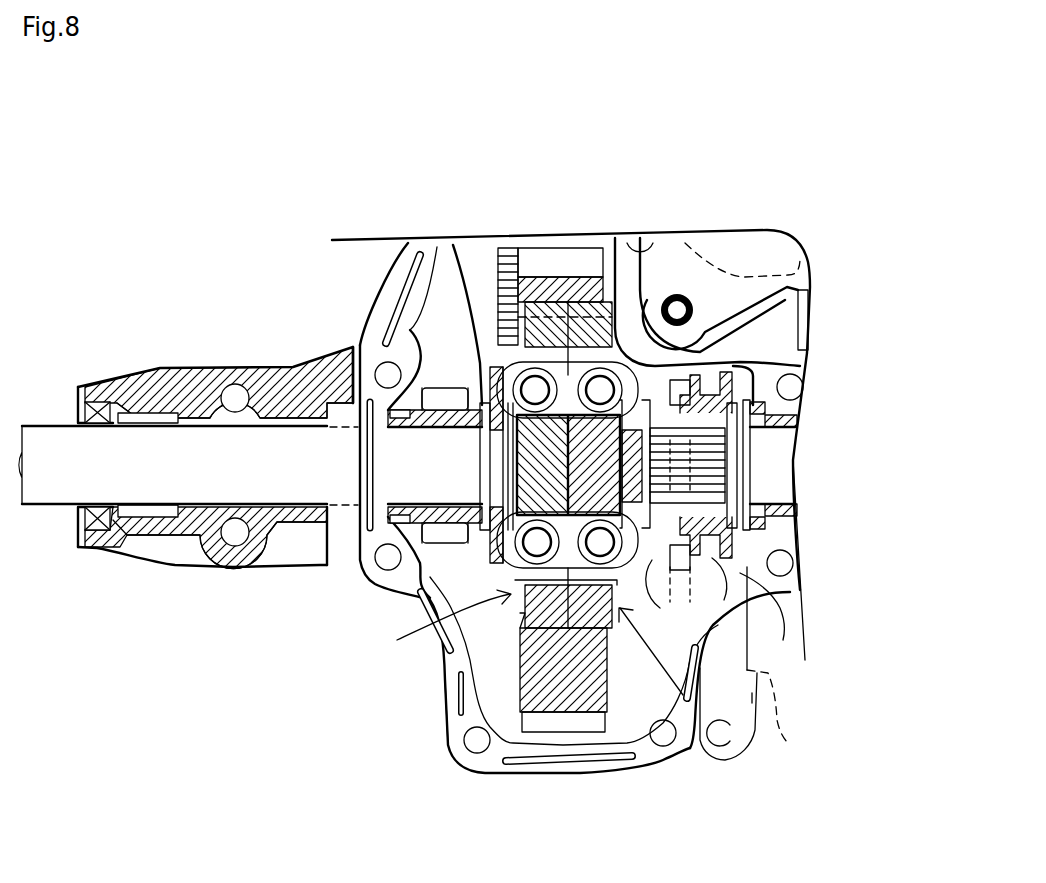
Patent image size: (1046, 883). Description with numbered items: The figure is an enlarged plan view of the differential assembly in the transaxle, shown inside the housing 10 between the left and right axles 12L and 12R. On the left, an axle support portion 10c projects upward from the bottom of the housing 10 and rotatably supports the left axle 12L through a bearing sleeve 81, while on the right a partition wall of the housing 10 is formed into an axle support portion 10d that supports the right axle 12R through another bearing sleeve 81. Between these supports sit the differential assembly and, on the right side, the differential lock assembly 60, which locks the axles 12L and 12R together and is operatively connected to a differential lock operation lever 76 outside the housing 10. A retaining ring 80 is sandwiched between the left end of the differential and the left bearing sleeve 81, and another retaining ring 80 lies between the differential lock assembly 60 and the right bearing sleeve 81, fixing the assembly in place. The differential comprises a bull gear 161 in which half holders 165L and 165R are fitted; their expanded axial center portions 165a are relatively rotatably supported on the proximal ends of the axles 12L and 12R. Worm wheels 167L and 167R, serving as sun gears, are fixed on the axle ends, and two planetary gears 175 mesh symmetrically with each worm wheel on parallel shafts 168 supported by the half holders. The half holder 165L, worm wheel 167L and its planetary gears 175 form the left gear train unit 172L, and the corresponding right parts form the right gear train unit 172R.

The housing 10 is at (407, 262).
The axle support portion 10c is at (393, 578).
The axle support portion 10d is at (793, 592).
The left axle 12L is at (138, 430).
The right axle 12R is at (787, 460).
The differential lock assembly 60 is at (787, 567).
The differential lock operation lever 76 is at (788, 717).
The retaining ring 80 is at (490, 450).
The bearing sleeve 81 is at (370, 545).
The bull gear 161 is at (460, 710).
The axial center portion 165a is at (470, 400).
The left half holder 165L is at (462, 666).
The right half holder 165R is at (618, 612).
The worm wheel 167L is at (440, 365).
The worm wheel 167R is at (637, 412).
The parallel shaft 168 is at (620, 368).
The left gear train unit 172L is at (428, 622).
The right gear train unit 172R is at (690, 748).
The planetary gear 175 is at (533, 378).